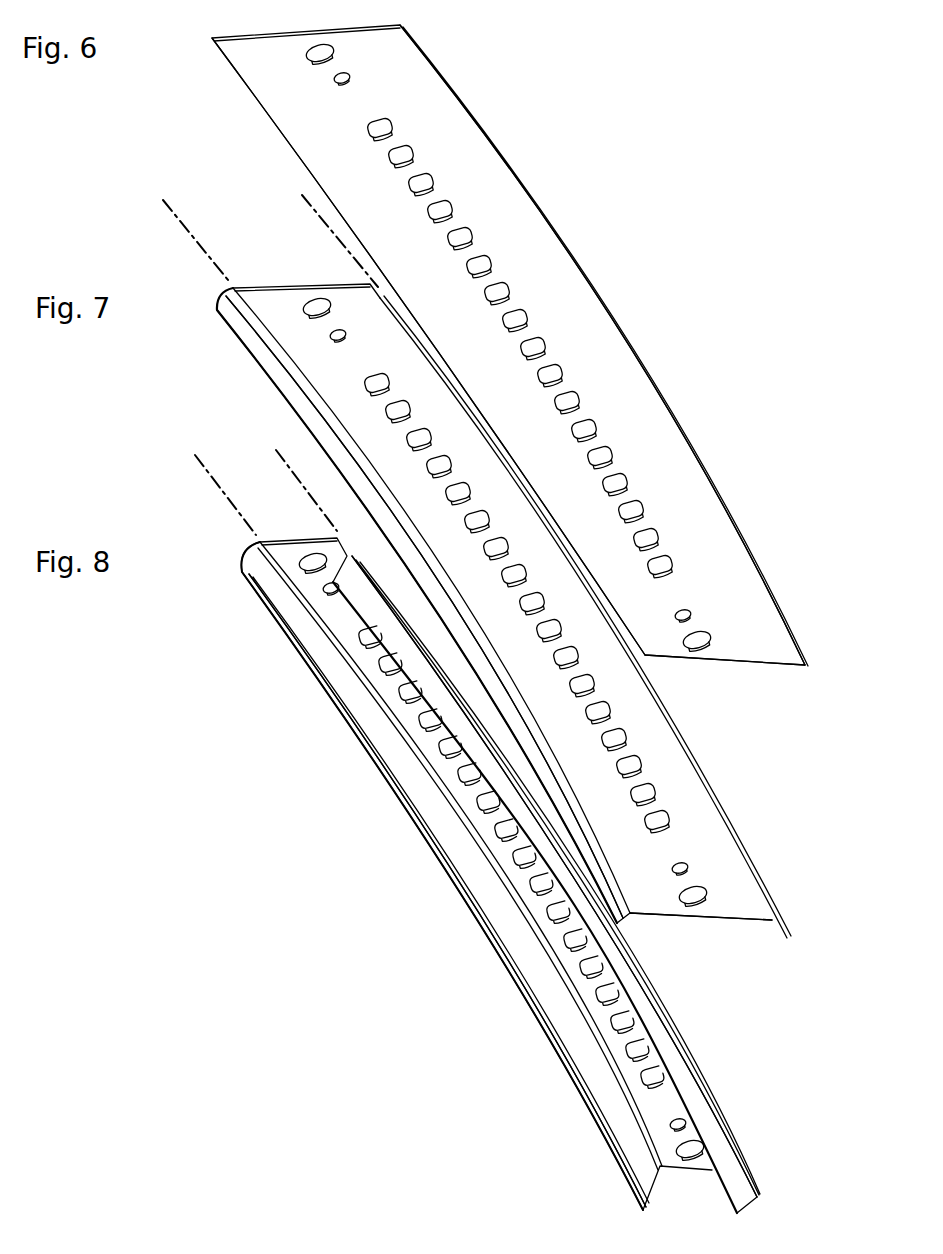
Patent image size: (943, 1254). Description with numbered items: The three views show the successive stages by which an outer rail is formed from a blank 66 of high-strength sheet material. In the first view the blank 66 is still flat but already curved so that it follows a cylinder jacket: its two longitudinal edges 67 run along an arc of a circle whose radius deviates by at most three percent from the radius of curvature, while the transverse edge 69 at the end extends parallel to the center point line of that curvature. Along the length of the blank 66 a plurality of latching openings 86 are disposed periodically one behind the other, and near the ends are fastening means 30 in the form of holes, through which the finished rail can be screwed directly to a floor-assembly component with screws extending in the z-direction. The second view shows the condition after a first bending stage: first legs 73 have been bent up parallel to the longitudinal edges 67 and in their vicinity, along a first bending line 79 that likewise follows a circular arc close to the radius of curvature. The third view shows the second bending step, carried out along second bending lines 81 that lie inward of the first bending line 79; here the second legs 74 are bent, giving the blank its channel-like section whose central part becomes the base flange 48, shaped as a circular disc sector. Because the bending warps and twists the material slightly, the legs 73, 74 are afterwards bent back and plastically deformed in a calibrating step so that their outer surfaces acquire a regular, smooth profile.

In FIG. 6, the blank 66 is at (293, 86).
In FIG. 6, the longitudinal edges 67 is at (294, 144).
In FIG. 7, the longitudinal edges 67 is at (260, 371).
In FIG. 8, the longitudinal edges 67 is at (289, 644).
In FIG. 6, the latching openings 86 is at (560, 160).
In FIG. 6, the fastening means 30 is at (700, 640).
In FIG. 6, the transverse edge 69 is at (728, 670).
In FIG. 7, the transverse edge 69 is at (728, 923).
In FIG. 7, the first legs 73 is at (236, 322).
In FIG. 8, the first legs 73 is at (702, 1110).
In FIG. 7, the first bending line 79 is at (160, 231).
In FIG. 8, the second bending lines 81 is at (193, 484).
In FIG. 7, the second legs 74 is at (494, 603).
In FIG. 8, the second legs 74 is at (260, 566).
In FIG. 8, the base flange 48 is at (382, 686).